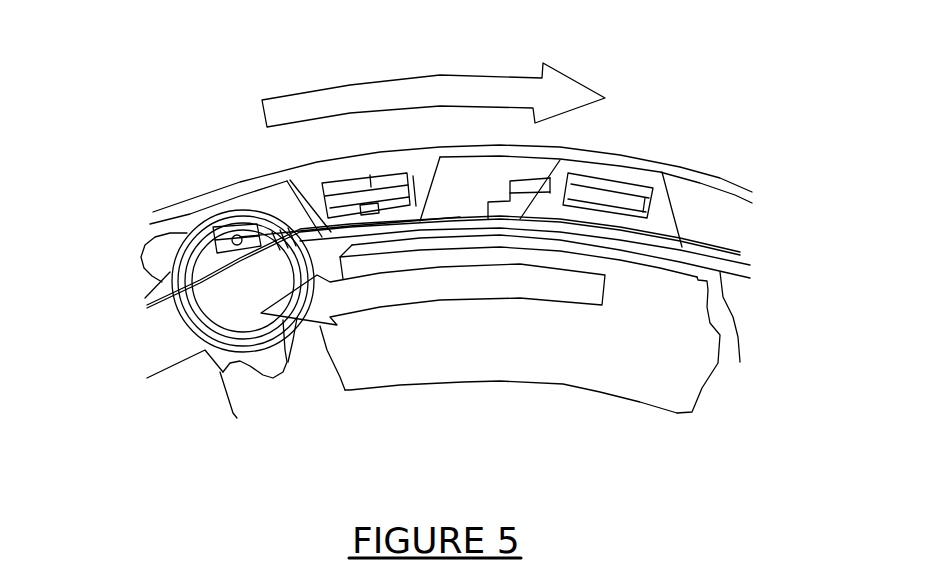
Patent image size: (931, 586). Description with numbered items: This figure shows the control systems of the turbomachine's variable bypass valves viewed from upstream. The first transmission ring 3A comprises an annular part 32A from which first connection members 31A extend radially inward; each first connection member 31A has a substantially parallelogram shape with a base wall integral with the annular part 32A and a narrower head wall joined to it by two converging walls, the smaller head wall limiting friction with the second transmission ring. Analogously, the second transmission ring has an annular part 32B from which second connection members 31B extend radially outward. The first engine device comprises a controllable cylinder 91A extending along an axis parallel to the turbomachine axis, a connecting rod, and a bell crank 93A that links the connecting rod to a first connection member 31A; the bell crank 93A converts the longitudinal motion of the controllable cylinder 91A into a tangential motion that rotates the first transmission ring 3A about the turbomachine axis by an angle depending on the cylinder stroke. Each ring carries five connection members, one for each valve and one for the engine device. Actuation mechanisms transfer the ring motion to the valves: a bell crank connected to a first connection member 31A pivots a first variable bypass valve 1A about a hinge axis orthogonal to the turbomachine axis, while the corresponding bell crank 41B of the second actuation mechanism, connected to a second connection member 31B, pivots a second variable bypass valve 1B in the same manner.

The first transmission ring 3A is at (451, 121).
The first connection member 31A is at (337, 118).
The second connection member 31B is at (596, 115).
The bell crank 41B is at (623, 129).
The annular part 32A is at (694, 183).
The annular part 32B is at (739, 332).
The bell crank 93A is at (309, 173).
The controllable cylinder 91A is at (187, 281).
The first variable bypass valve 1A is at (441, 354).
The second variable bypass valve 1B is at (520, 369).